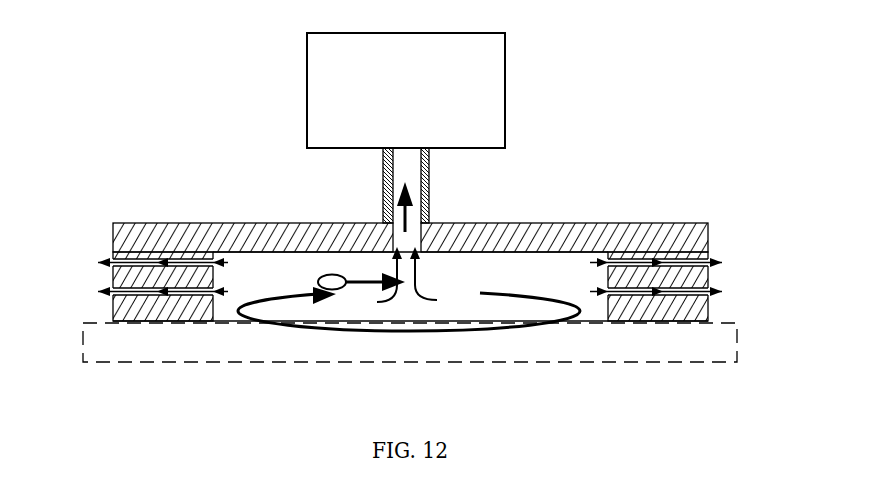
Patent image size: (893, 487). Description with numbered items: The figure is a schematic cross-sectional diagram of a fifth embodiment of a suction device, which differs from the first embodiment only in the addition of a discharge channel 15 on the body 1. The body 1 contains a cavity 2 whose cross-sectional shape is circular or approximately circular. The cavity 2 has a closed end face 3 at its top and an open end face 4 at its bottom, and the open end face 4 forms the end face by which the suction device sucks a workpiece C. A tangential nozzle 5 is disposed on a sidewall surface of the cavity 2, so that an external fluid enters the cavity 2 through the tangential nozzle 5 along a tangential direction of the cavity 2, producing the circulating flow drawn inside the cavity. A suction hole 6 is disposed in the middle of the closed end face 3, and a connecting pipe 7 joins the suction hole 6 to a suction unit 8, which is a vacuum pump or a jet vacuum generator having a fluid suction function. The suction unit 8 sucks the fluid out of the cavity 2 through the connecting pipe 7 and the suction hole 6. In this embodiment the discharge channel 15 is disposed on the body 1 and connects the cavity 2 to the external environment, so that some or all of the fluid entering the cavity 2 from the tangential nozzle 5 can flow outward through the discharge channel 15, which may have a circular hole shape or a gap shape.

The body 1 is at (207, 223).
The cavity 2 is at (578, 285).
The closed end face 3 is at (557, 252).
The open end face 4 is at (422, 322).
The tangential nozzle 5 is at (332, 282).
The suction hole 6 is at (402, 238).
The connecting pipe 7 is at (428, 172).
The suction unit 8 is at (487, 55).
The discharge channel 15 is at (152, 297).
The workpiece C is at (235, 335).